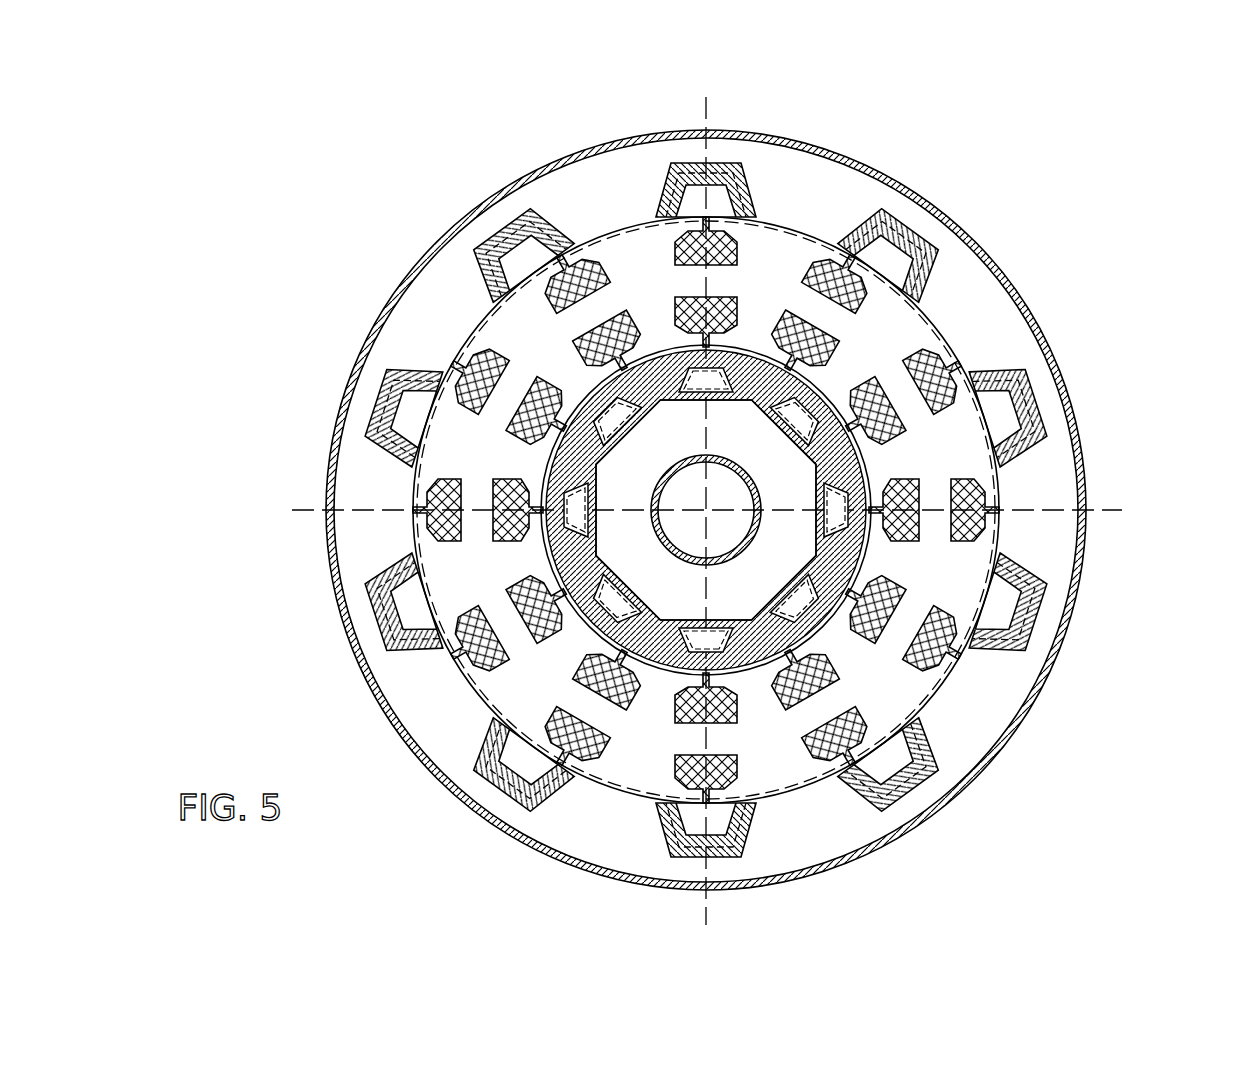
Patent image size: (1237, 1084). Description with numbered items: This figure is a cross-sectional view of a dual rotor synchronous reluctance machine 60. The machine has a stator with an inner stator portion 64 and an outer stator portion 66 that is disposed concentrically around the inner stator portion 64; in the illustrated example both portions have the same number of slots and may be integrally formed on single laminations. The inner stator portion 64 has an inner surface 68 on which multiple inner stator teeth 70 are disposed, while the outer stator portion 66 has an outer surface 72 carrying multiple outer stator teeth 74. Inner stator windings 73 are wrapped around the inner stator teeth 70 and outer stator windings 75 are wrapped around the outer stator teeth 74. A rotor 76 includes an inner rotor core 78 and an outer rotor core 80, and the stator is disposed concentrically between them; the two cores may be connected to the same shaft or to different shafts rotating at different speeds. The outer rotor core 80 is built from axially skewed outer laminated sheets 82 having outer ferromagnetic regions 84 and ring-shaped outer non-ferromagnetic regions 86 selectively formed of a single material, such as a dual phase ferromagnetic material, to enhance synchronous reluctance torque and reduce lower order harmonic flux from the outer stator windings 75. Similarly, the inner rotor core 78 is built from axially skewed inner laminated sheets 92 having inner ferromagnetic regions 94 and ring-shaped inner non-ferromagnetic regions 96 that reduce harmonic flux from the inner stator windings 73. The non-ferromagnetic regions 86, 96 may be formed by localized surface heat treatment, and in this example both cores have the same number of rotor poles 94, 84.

The synchronous reluctance machine 60 is at (1142, 168).
The inner stator portion 64 is at (903, 463).
The outer stator portion 66 is at (1040, 410).
The inner surface 68 is at (865, 455).
The inner stator teeth 70 is at (863, 690).
The outer surface 72 is at (955, 350).
The inner stator windings 73 is at (672, 708).
The outer stator teeth 74 is at (782, 250).
The outer stator windings 75 is at (490, 660).
The rotor 76 is at (548, 563).
The inner rotor core 78 is at (615, 548).
The outer rotor core 80 is at (405, 330).
The outer laminated sheets 82 is at (581, 208).
The outer ferromagnetic regions 84 is at (507, 228).
The outer non-ferromagnetic regions 86 is at (480, 268).
The inner laminated sheets 92 is at (647, 595).
The inner ferromagnetic regions 94 is at (590, 400).
The inner non-ferromagnetic regions 96 is at (648, 400).